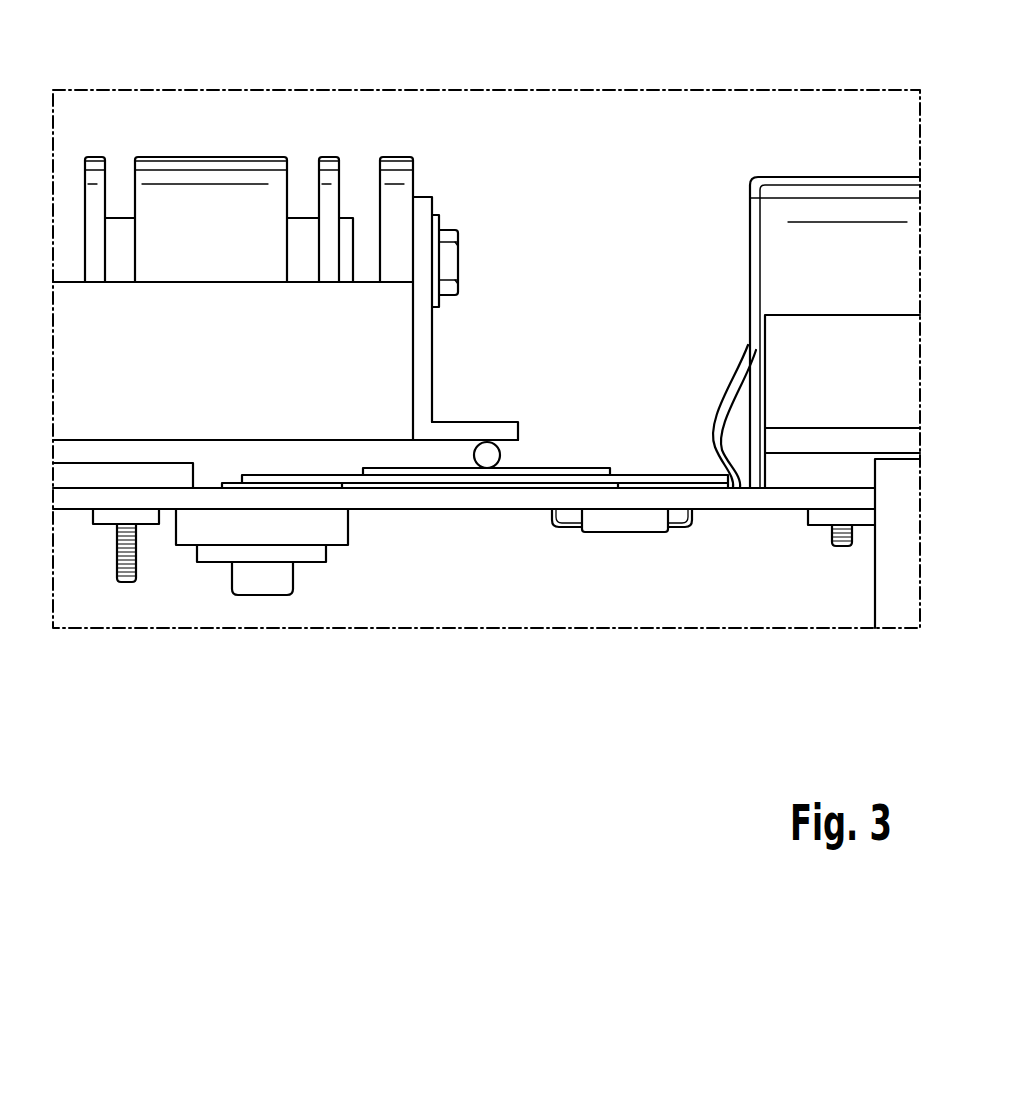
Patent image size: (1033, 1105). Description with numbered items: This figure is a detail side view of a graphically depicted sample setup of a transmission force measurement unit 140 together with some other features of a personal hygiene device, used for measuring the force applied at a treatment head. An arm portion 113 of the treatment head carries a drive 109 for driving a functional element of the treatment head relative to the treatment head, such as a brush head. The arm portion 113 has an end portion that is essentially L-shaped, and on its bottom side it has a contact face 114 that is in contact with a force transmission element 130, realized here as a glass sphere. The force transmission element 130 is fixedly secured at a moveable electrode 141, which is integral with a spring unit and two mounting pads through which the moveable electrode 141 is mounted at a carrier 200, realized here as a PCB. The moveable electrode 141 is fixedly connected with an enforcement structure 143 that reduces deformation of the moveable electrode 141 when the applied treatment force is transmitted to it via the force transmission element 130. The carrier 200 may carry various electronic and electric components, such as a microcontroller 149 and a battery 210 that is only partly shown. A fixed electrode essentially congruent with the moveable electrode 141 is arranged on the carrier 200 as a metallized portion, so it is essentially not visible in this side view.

The drive 109 is at (203, 175).
The arm portion 113 is at (452, 394).
The contact face 114 is at (437, 443).
The force transmission element 130 is at (490, 456).
The transmission force measurement unit 140 is at (515, 409).
The moveable electrode 141 is at (492, 477).
The enforcement structure 143 is at (617, 462).
The microcontroller 149 is at (617, 523).
The carrier 200 is at (475, 518).
The battery 210 is at (822, 193).